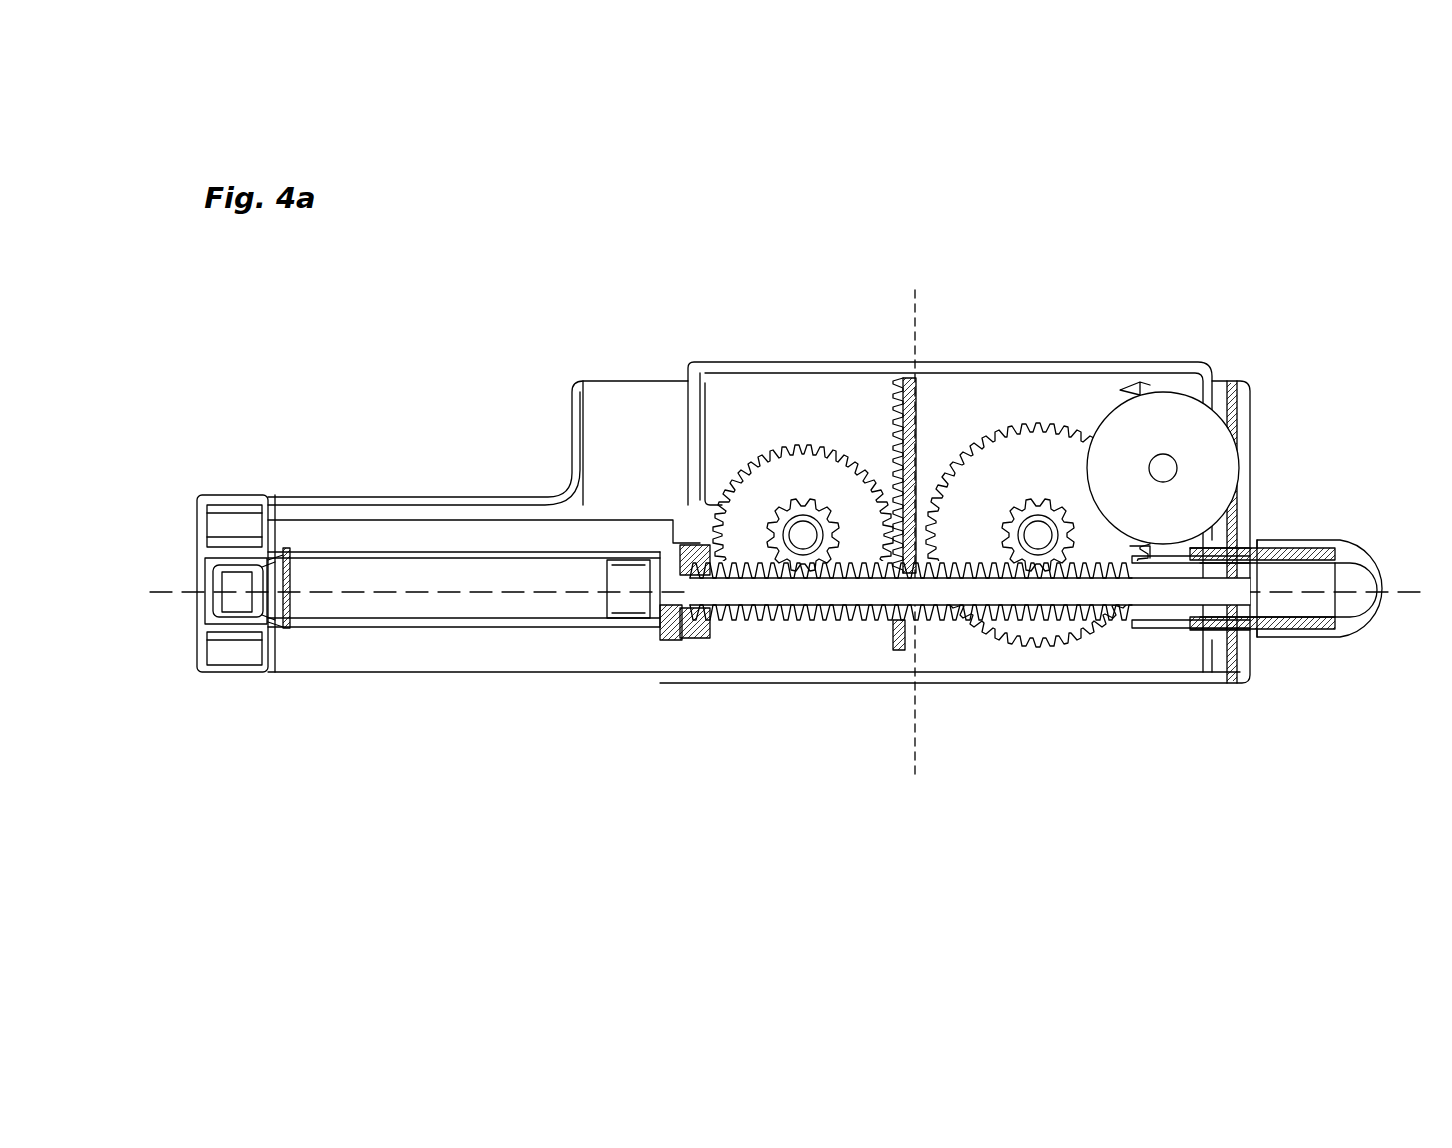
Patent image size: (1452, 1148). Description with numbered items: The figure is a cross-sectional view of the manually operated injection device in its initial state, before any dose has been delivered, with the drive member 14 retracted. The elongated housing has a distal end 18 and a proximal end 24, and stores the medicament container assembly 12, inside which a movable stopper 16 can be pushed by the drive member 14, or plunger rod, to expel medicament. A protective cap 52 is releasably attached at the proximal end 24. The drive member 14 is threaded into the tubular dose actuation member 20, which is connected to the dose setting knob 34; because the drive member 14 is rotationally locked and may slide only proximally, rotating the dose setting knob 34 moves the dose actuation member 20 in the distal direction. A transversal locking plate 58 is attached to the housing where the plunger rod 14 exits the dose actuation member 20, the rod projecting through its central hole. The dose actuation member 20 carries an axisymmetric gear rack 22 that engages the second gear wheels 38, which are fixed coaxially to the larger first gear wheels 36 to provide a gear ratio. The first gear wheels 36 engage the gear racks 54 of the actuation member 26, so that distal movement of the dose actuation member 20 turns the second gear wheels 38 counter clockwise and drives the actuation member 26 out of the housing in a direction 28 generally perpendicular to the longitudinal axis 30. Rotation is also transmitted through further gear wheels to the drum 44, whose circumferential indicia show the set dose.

The medicament container assembly 12 is at (416, 607).
The drive member 14 is at (712, 592).
The movable stopper 16 is at (622, 592).
The distal end 18 is at (1210, 278).
The tubular dose actuation member 20 is at (1153, 612).
The gear rack 22 is at (1057, 612).
The proximal end 24 is at (310, 412).
The actuation member 26 is at (1045, 362).
The direction 28 is at (915, 292).
The longitudinal axis 30 is at (1427, 590).
The dose setting knob 34 is at (1335, 555).
The first gear wheels 36 is at (760, 480).
The second gear wheels 38 is at (802, 507).
The drum 44 is at (1172, 430).
The protective cap 52 is at (235, 497).
The gear racks 54 is at (900, 633).
The locking plate 58 is at (683, 622).